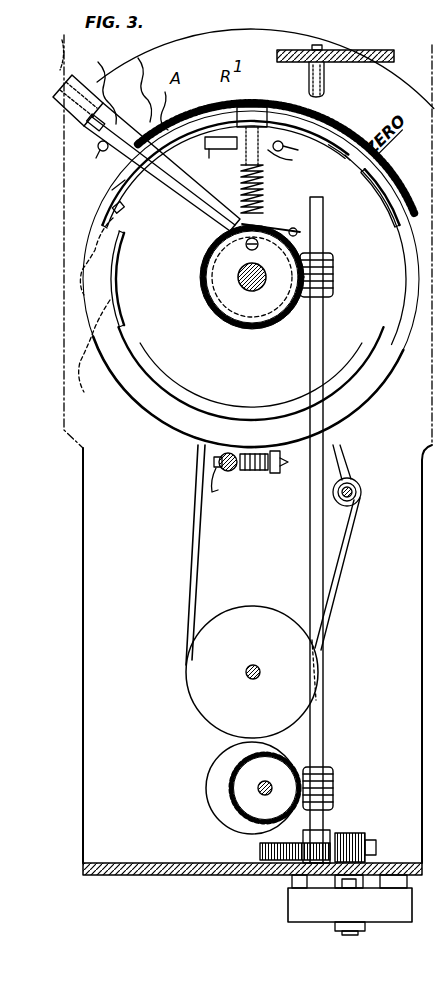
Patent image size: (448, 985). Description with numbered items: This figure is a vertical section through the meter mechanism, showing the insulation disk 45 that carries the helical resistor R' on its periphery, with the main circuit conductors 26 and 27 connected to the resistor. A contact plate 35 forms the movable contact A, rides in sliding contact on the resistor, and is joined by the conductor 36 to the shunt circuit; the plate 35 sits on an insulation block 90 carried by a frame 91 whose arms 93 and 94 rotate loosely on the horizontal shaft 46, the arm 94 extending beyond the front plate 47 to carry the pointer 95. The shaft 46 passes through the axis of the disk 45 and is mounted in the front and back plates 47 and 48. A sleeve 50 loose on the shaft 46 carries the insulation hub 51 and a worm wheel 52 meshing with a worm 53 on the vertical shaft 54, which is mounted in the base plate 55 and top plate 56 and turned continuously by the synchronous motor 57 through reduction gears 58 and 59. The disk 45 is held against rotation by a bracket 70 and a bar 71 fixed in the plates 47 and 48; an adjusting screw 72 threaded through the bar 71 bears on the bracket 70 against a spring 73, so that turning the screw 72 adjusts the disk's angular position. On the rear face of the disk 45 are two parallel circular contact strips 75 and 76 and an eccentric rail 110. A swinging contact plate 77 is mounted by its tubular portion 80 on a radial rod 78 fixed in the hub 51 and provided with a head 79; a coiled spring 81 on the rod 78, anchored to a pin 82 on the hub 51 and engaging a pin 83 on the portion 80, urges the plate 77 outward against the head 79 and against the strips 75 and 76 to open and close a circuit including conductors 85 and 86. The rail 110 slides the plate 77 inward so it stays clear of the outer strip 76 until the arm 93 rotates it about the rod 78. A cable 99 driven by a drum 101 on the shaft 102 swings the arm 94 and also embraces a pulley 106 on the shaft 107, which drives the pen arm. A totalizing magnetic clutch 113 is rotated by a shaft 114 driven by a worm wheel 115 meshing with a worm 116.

The conductor 26 is at (134, 79).
The conductor 27 is at (414, 205).
The contact plate 35 is at (157, 98).
The conductor 36 is at (96, 83).
The disk 45 is at (126, 388).
The horizontal shaft 46 is at (256, 330).
The front plate 47 is at (433, 742).
The back plate 48 is at (439, 832).
The sleeve 50 is at (245, 290).
The hub 51 is at (280, 318).
The worm wheel 52 is at (286, 302).
The worm 53 is at (333, 290).
The vertical shaft 54 is at (322, 52).
The base plate 55 is at (150, 876).
The top plate 56 is at (380, 62).
The synchronous motor 57 is at (290, 900).
The reduction gear 58 is at (360, 835).
The reduction gear 59 is at (262, 852).
The bracket 70 is at (276, 474).
The bar 71 is at (230, 472).
The adjusting screw 72 is at (225, 504).
The spring 73 is at (252, 470).
The contact strip 75 is at (125, 258).
The contact strip 76 is at (118, 200).
The swinging contact plate 77 is at (215, 150).
The radial rod 78 is at (240, 185).
The head 79 is at (255, 110).
The tubular portion 80 is at (280, 142).
The coiled spring 81 is at (262, 218).
The pin 82 is at (296, 228).
The pin 83 is at (262, 172).
The conductor 85 is at (90, 246).
The conductor 86 is at (90, 346).
The block 90 is at (99, 155).
The frame 91 is at (95, 127).
The arm 93 is at (185, 220).
The arm 94 is at (95, 85).
The pointer 95 is at (62, 52).
The cable 99 is at (195, 575).
The drum 101 is at (340, 500).
The shaft 102 is at (360, 495).
The pulley 106 is at (200, 698).
The shaft 107 is at (256, 680).
The eccentric rail 110 is at (160, 390).
The magnetic clutch 113 is at (208, 808).
The shaft 114 is at (240, 810).
The worm wheel 115 is at (262, 795).
The worm 116 is at (333, 790).